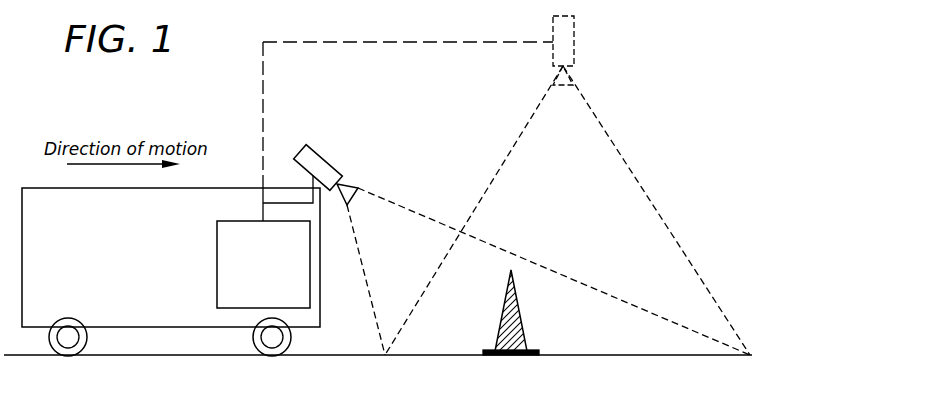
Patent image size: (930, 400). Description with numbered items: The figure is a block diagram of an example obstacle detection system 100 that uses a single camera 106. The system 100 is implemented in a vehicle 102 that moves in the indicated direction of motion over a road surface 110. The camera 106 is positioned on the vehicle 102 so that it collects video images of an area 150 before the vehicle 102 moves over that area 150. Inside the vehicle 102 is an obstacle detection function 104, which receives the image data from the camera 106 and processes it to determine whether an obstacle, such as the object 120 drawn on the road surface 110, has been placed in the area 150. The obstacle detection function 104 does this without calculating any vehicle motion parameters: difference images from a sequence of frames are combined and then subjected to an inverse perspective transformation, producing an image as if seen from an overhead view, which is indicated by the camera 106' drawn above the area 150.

The obstacle detection system 100 is at (594, 131).
The vehicle 102 is at (139, 290).
The obstacle detection function 104 is at (278, 297).
The camera 106 is at (522, 224).
The camera (overhead view) 106' is at (611, 49).
The road surface 110 is at (672, 355).
The obstacle (traffic cone) 120 is at (520, 308).
The area 150 is at (613, 343).